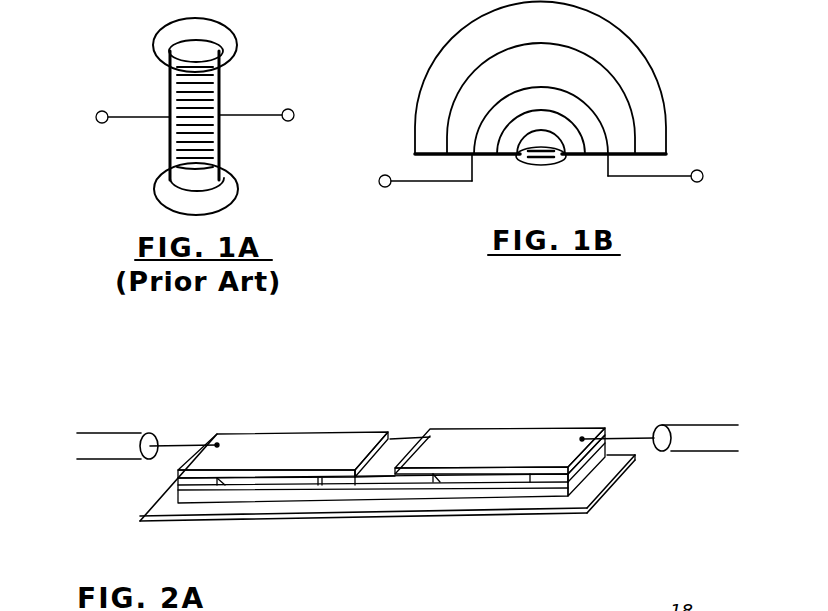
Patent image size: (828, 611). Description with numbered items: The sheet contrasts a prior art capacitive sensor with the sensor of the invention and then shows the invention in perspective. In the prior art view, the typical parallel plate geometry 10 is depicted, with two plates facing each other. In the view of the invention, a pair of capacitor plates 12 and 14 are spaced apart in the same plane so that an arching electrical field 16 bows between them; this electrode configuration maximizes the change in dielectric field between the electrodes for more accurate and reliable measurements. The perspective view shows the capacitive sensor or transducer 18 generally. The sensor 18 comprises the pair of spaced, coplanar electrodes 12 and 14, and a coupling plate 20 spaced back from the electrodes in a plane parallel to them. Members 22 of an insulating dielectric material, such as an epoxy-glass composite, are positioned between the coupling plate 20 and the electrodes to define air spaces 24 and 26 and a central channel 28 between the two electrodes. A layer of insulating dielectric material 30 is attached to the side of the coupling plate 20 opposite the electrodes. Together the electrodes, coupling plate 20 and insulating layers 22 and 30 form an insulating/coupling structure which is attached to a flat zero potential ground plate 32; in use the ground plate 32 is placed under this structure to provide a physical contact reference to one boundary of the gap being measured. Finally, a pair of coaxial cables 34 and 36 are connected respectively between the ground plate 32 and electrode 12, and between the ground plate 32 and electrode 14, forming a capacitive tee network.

In FIG. 1A, the parallel plate geometry 10 is at (252, 91).
In FIG. 1B, the capacitor plate 12 is at (654, 155).
In FIG. 2A, the capacitor plate 12 is at (575, 433).
In FIG. 1B, the capacitor plate 14 is at (437, 157).
In FIG. 2A, the capacitor plate 14 is at (228, 440).
In FIG. 1B, the arching electrical field 16 is at (660, 58).
In FIG. 2A, the capacitive sensor 18 is at (586, 399).
In FIG. 2A, the coupling plate 20 is at (381, 481).
In FIG. 2A, the insulating dielectric members 22 is at (367, 460).
In FIG. 2A, the air space 24 is at (260, 481).
In FIG. 2A, the air space 26 is at (476, 477).
In FIG. 2A, the central channel 28 is at (426, 436).
In FIG. 2A, the insulating dielectric layer 30 is at (483, 493).
In FIG. 2A, the ground plate 32 is at (598, 500).
In FIG. 2A, the coaxial cable 34 is at (685, 448).
In FIG. 2A, the coaxial cable 36 is at (123, 451).